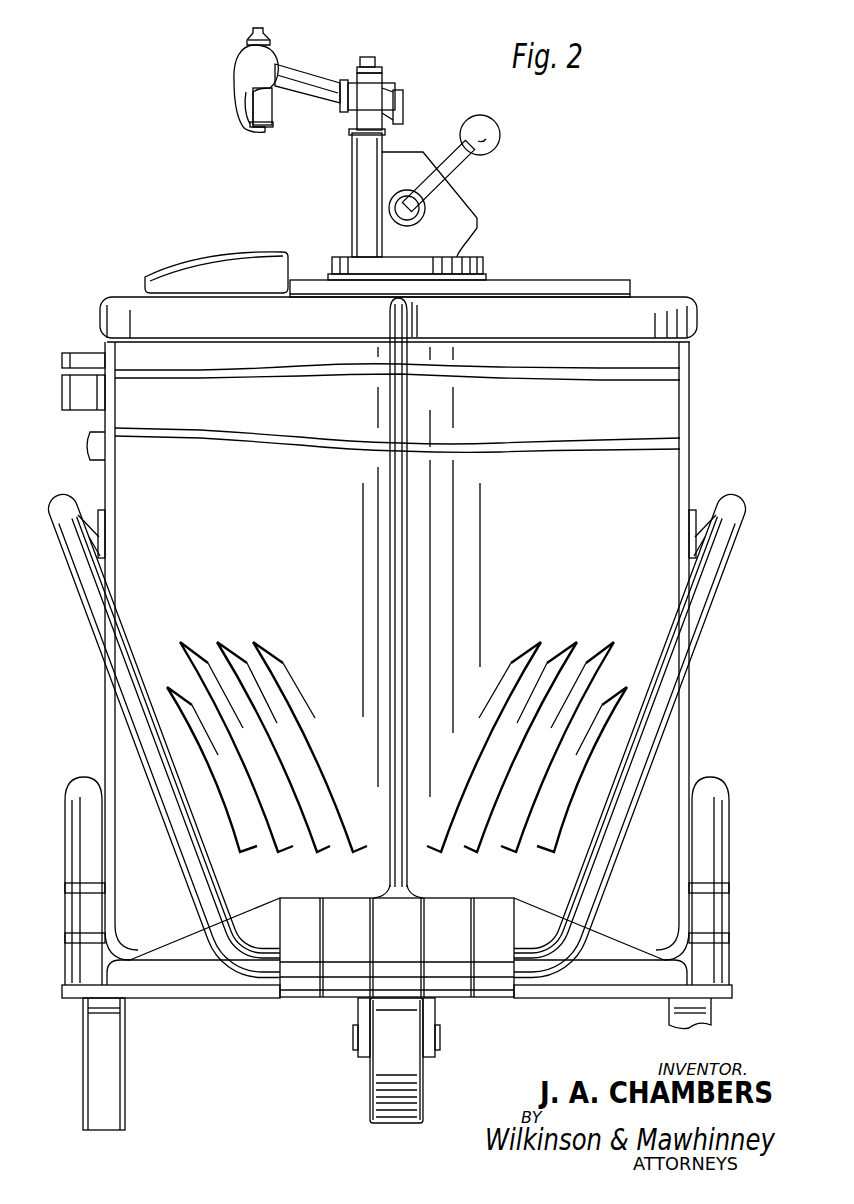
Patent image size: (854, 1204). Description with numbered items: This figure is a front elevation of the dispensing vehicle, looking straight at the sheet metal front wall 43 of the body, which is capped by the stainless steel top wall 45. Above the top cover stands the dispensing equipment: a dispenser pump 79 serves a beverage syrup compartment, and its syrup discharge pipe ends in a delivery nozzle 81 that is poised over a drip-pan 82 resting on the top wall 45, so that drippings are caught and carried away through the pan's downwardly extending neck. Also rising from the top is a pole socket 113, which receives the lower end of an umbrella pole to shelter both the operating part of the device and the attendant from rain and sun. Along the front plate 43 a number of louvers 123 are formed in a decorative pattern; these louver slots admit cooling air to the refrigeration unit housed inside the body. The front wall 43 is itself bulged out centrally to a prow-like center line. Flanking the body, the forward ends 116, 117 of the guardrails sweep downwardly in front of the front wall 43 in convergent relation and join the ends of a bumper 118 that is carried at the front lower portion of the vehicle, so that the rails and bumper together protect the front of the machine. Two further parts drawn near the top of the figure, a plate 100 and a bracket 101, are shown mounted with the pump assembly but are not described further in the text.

The front wall 43 is at (645, 487).
The top wall 45 is at (643, 310).
The dispenser pump 79 is at (463, 215).
The delivery nozzle 81 is at (365, 210).
The drip-pan 82 is at (235, 270).
The plate 100 is at (520, 280).
The bracket 101 is at (472, 260).
The pole socket 113 is at (85, 363).
The forward end of guardrail 116 is at (112, 635).
The forward end of guardrail 117 is at (652, 732).
The bumper 118 is at (355, 950).
The louvers 123 is at (187, 705).